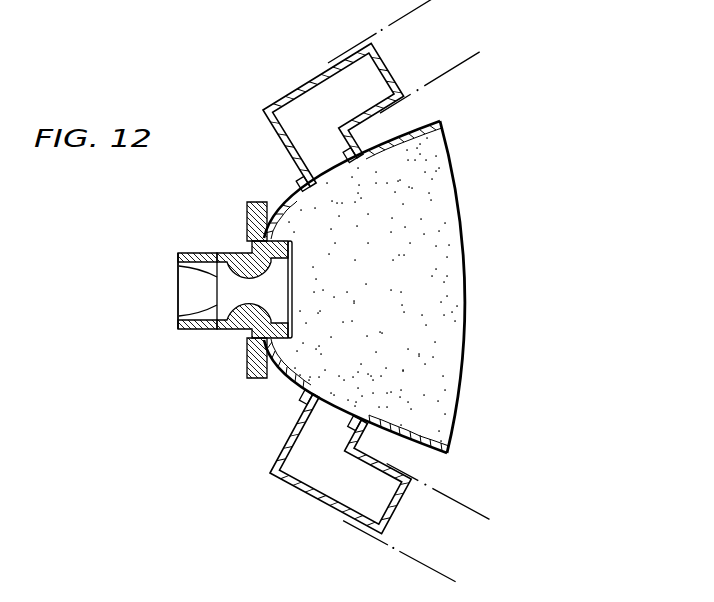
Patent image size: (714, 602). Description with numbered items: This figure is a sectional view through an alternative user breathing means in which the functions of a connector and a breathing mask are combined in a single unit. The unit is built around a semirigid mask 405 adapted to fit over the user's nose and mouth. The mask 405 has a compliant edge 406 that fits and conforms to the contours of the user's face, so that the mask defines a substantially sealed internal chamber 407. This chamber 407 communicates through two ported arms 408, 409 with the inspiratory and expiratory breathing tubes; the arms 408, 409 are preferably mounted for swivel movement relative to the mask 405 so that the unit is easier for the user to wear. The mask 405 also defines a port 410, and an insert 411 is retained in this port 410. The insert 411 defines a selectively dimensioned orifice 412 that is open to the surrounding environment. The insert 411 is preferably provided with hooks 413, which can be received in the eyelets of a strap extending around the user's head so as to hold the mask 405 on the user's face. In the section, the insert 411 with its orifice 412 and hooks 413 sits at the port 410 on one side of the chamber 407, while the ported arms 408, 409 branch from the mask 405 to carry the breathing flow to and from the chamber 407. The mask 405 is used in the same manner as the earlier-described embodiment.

The semirigid mask 405 is at (466, 177).
The compliant edge 406 is at (464, 216).
The internal chamber 407 is at (453, 279).
The ported arm 408 is at (307, 82).
The ported arm 409 is at (312, 497).
The port 410 is at (293, 270).
The insert 411 is at (187, 252).
The orifice 412 is at (180, 292).
The hooks 413 is at (246, 204).